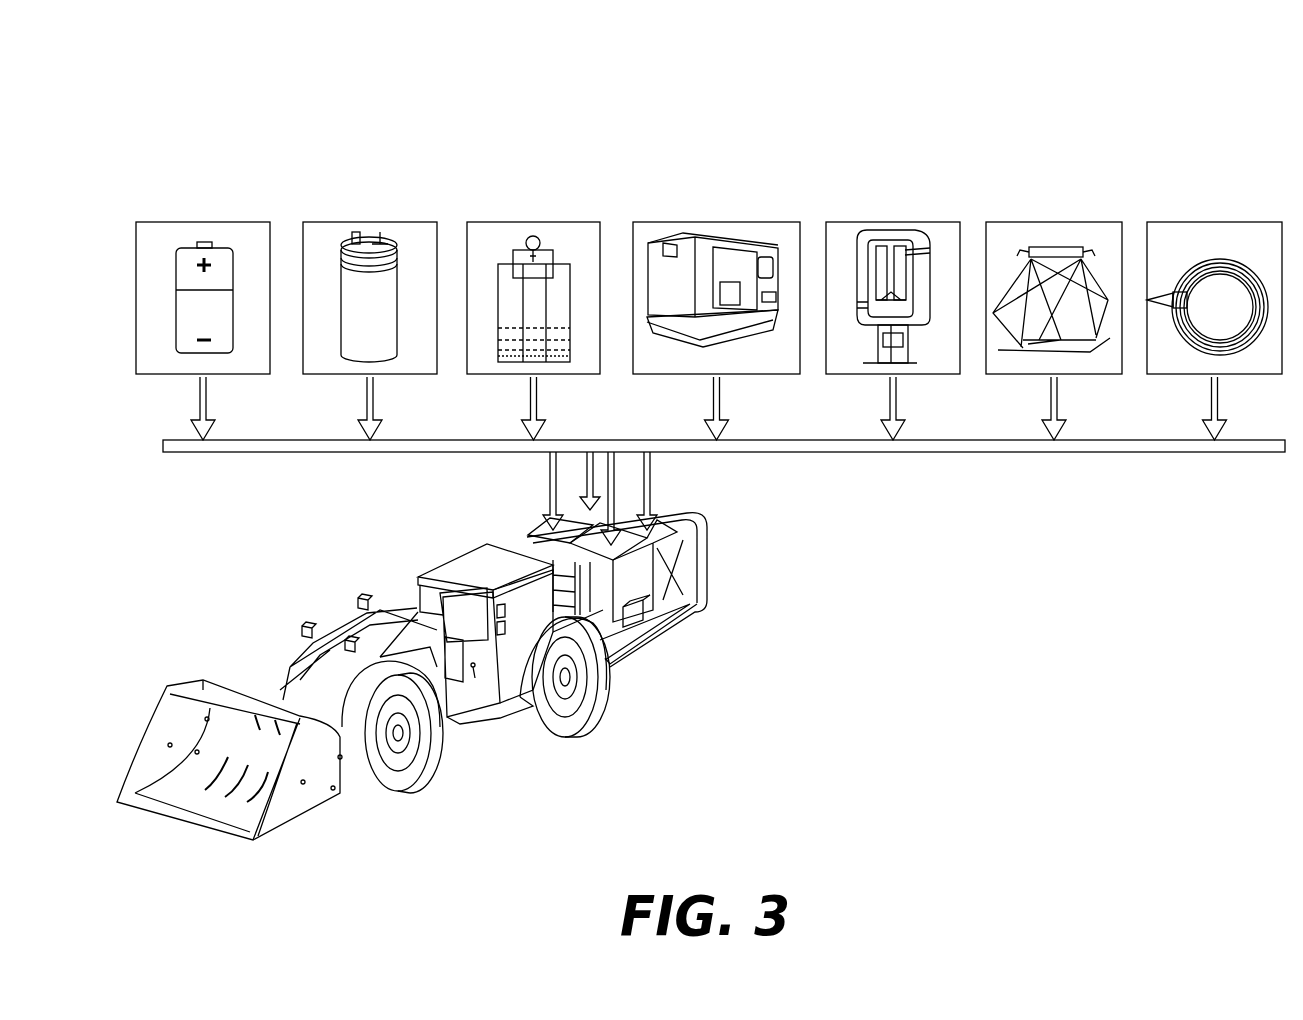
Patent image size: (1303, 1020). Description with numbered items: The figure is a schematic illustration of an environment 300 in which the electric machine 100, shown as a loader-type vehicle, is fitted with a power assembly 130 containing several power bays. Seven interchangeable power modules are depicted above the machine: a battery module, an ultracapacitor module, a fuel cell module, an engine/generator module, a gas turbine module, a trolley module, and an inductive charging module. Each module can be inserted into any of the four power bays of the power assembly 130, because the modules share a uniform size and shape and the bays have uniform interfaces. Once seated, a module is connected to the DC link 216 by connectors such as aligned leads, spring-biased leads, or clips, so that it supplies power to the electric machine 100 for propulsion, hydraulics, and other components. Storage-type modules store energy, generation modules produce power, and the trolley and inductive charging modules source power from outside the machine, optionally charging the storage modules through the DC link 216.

The environment 300 is at (1141, 74).
The DC link 216 is at (1164, 453).
The electric machine 100 is at (492, 781).
The power assembly 130 is at (714, 565).